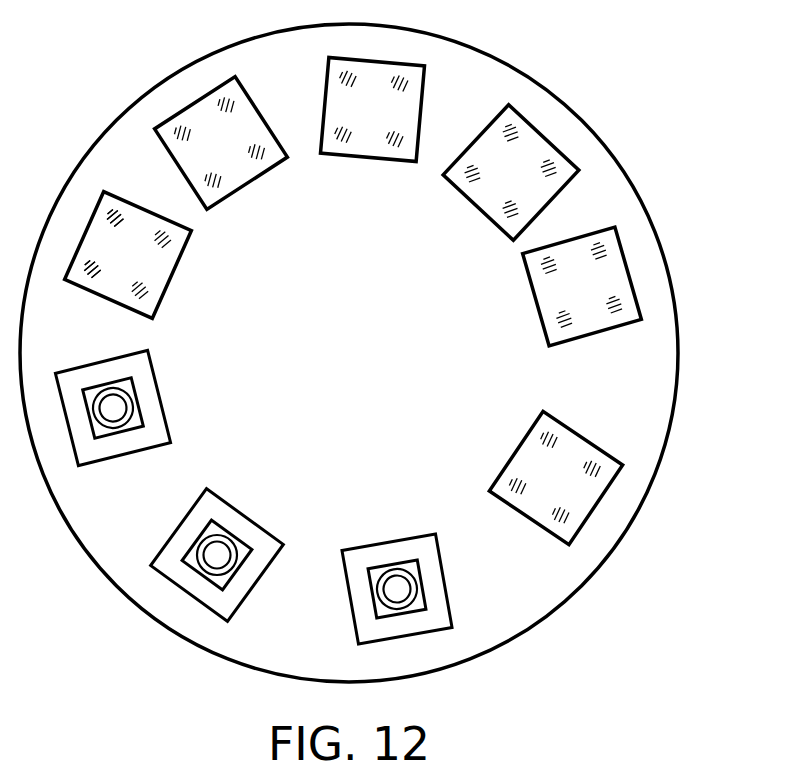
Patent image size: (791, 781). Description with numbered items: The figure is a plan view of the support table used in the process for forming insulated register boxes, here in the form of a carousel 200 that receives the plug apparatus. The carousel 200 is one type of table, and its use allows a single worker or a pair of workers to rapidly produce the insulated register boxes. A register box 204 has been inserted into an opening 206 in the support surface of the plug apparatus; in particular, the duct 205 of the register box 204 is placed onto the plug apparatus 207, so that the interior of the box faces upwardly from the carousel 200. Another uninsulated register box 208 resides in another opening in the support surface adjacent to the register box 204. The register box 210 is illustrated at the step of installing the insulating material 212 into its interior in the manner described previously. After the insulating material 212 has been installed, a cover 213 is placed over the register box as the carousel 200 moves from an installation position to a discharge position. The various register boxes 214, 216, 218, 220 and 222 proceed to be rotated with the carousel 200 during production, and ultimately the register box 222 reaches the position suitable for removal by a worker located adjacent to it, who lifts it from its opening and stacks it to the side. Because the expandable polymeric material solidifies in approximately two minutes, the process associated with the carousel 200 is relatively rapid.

The carousel 200 is at (657, 410).
The register box 204 is at (222, 497).
The duct 205 is at (197, 547).
The opening 206 is at (237, 535).
The plug apparatus 207 is at (223, 557).
The uninsulated register box 208 is at (163, 382).
The register box 210 is at (197, 267).
The insulating material 212 is at (92, 287).
The cover 213 is at (123, 207).
The register box 214 is at (253, 185).
The register box 216 is at (368, 163).
The register box 218 is at (477, 212).
The register box 220 is at (532, 310).
The register box 222 is at (508, 455).